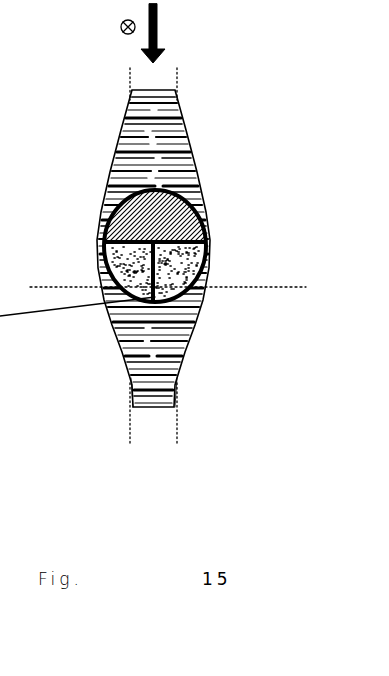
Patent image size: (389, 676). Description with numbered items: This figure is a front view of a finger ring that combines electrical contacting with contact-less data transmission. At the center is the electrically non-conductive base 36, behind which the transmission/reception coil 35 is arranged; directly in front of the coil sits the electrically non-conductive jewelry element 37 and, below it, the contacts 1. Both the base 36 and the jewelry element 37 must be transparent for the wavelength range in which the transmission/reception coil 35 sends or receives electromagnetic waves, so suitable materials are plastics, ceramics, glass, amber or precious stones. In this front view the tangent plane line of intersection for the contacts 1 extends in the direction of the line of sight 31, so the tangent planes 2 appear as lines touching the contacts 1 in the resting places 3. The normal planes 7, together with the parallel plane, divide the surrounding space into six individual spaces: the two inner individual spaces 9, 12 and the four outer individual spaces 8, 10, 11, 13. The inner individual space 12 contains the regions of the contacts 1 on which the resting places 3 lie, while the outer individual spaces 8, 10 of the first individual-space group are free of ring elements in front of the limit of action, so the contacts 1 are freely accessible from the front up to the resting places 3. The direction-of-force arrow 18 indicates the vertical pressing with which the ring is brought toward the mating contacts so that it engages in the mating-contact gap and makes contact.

The contact 1 is at (100, 243).
The tangent plane 2 is at (62, 368).
The resting place 3 is at (98, 278).
The normal plane 7 is at (128, 423).
The outer individual space 8 is at (96, 438).
The inner individual space 9 is at (153, 415).
The outer individual space 10 is at (217, 438).
The outer individual space 11 is at (89, 82).
The inner individual space 12 is at (153, 84).
The outer individual space 13 is at (217, 82).
The direction-of-force arrow 18 is at (158, 25).
The line of sight 31 is at (121, 23).
The transmission/reception coil 35 is at (30, 287).
The electrically non-conductive base 36 is at (207, 222).
The jewelry element 37 is at (110, 208).